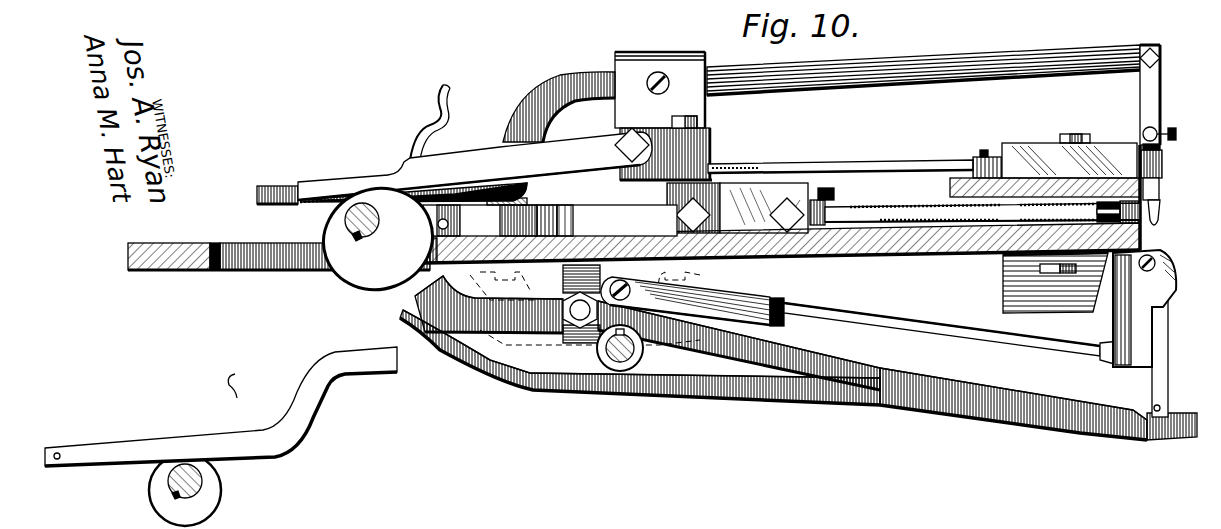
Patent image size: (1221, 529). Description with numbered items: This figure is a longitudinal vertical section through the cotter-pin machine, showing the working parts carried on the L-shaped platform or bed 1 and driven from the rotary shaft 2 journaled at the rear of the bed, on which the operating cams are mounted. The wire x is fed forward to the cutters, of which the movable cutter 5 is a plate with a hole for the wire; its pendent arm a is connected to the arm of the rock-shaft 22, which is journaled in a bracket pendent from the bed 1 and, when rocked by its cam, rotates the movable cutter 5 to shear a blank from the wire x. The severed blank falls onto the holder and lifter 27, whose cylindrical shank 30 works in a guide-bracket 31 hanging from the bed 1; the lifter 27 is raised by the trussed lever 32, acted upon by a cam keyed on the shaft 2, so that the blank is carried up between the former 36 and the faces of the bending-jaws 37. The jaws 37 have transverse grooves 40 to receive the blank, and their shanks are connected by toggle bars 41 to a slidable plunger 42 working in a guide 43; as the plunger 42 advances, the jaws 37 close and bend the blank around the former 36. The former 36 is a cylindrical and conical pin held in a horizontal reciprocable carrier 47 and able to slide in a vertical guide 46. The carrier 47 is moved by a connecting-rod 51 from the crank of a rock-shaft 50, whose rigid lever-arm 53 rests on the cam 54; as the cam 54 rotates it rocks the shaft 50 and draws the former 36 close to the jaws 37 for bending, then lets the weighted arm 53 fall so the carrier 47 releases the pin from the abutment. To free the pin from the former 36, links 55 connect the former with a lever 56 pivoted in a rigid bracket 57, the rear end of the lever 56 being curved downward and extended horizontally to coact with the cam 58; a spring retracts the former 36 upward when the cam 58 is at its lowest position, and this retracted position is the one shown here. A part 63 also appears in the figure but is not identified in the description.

The platform or bed 1 is at (279, 268).
The rotary shaft 2 is at (372, 212).
The movable cutter 5 is at (1137, 305).
The pendent arm a is at (1140, 308).
The rock-shaft 22 is at (620, 350).
The holder and lifter 27 is at (952, 324).
The cylindrical shank 30 is at (1168, 385).
The guide-bracket 31 is at (1055, 283).
The trussed lever 32 is at (990, 415).
The former 36 is at (1160, 150).
The bending-jaws 37 is at (1102, 212).
The transverse grooves 40 is at (872, 203).
The bars 41 is at (915, 203).
The slidable plunger 42 is at (860, 248).
The guide 43 is at (737, 208).
The vertical guide 46 is at (1160, 205).
The horizontal reciprocable carrier 47 is at (985, 160).
The rock-shaft 50 is at (618, 146).
The connecting-rod 51 is at (893, 158).
The lever-arm 53 is at (475, 167).
The cam 54 is at (378, 239).
The links 55 is at (1162, 100).
The lever 56 is at (281, 178).
The rigid bracket 57 is at (660, 52).
The cam 58 is at (332, 208).
The wedge 63 is at (520, 200).
The wire x is at (1160, 252).